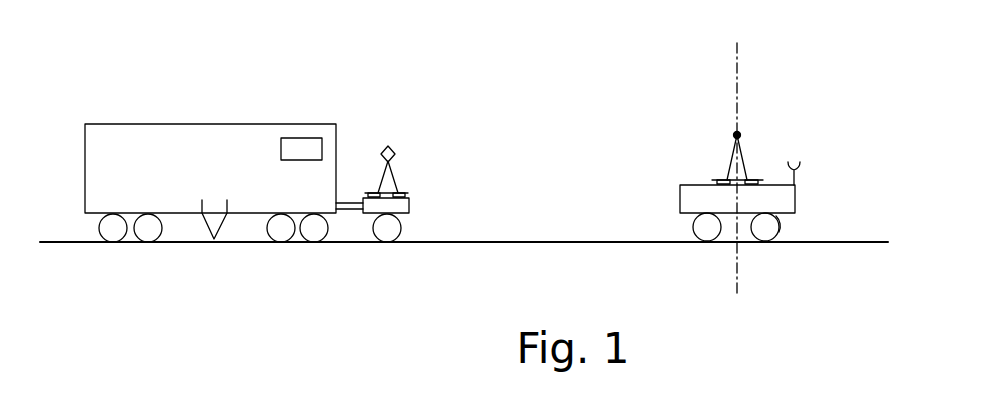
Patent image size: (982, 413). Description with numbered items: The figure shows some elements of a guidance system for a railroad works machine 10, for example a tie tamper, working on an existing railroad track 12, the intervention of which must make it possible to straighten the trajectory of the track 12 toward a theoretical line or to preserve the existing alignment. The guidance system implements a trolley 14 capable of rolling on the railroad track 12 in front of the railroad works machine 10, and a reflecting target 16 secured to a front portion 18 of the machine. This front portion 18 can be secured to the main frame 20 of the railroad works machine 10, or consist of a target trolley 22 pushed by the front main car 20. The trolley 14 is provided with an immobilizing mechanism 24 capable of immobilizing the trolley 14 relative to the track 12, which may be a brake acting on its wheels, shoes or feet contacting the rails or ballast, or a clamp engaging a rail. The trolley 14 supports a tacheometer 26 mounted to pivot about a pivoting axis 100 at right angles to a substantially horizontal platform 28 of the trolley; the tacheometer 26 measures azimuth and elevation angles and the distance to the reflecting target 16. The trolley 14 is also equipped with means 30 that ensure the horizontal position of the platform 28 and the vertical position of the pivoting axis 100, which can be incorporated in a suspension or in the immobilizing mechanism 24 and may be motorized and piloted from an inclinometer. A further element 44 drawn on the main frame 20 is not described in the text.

The railroad works machine 10 is at (253, 57).
The railroad track 12 is at (528, 242).
The trolley 14 is at (796, 202).
The reflecting target 16 is at (395, 153).
The front portion 18 is at (288, 258).
The main frame 20 is at (260, 140).
The target trolley 22 is at (377, 205).
The immobilizing mechanism 24 is at (786, 219).
The tacheometer 26 is at (740, 134).
The platform 28 is at (758, 180).
The means for ensuring horizontal position of the platform 30 is at (717, 180).
The control unit 44 is at (287, 150).
The pivoting axis 100 is at (737, 53).